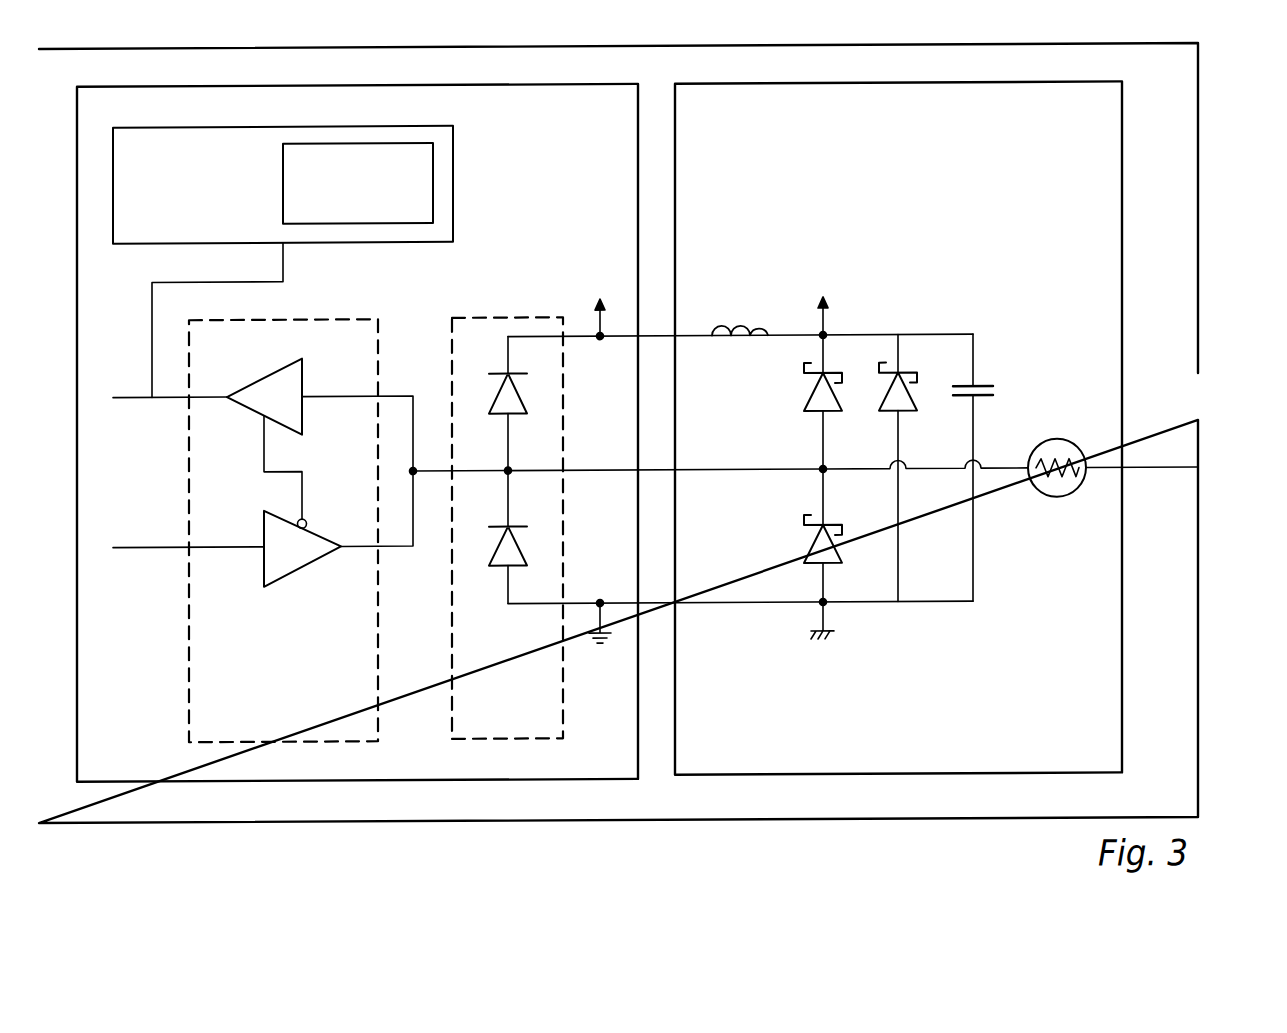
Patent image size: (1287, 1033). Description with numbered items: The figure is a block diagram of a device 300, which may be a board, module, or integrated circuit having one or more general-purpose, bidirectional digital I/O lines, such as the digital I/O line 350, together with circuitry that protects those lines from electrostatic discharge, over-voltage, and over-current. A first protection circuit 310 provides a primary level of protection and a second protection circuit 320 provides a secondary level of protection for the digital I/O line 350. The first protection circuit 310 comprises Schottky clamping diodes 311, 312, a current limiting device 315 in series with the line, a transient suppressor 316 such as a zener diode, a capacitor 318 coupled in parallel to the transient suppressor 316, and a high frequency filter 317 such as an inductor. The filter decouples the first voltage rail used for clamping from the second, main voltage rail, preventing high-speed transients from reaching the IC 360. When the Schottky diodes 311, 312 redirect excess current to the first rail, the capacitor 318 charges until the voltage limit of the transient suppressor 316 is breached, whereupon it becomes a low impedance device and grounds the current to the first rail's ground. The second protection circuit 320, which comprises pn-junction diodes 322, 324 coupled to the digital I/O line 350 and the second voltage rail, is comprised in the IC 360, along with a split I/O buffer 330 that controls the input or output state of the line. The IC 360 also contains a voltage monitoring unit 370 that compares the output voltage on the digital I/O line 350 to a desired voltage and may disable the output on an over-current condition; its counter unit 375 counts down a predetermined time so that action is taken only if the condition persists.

The device 300 is at (1189, 804).
The first protection circuit 310 is at (928, 765).
The Schottky diode 311 is at (836, 414).
The Schottky diode 312 is at (836, 519).
The current limiting device 315 is at (1061, 438).
The transient suppressor 316 is at (911, 414).
The high frequency filter 317 is at (749, 325).
The capacitor 318 is at (991, 384).
The second protection circuit 320 is at (525, 727).
The pn-junction diode 322 is at (525, 417).
The pn-junction diode 324 is at (525, 524).
The split I/O buffer 330 is at (300, 730).
The digital I/O line 350 is at (1152, 467).
The IC 360 is at (147, 768).
The voltage monitoring unit 370 is at (213, 219).
The counter unit 375 is at (375, 205).